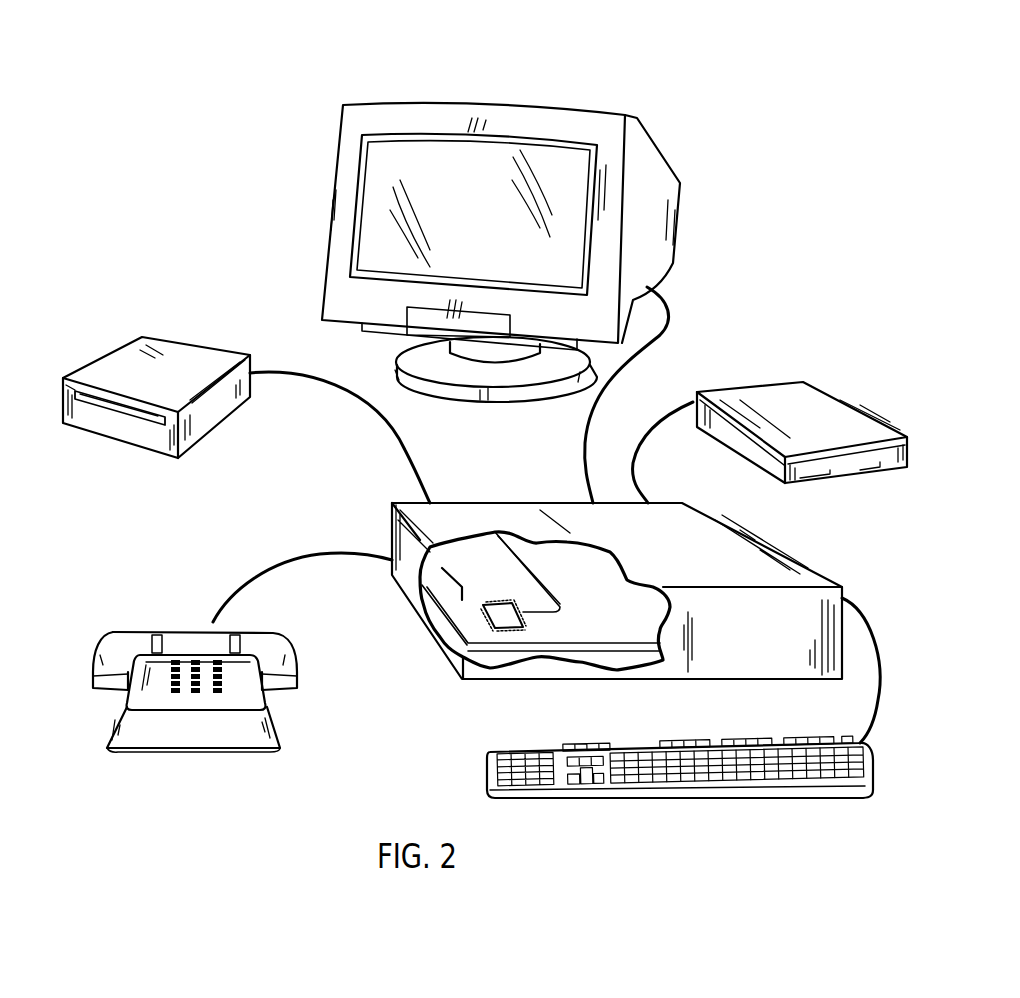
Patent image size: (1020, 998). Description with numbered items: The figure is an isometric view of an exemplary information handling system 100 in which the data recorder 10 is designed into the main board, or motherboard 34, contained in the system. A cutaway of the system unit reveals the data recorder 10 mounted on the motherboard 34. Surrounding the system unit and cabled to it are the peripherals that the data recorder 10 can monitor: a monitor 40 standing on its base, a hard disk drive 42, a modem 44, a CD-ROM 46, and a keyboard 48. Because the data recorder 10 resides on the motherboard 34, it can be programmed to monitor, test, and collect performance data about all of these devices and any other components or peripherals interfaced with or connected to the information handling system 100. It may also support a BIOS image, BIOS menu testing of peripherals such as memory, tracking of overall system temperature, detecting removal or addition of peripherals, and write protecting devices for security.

The information handling system 100 is at (758, 153).
The monitor 40 is at (328, 143).
The CD-ROM 46 is at (153, 357).
The hard disk drive 42 is at (785, 393).
The modem 44 is at (180, 623).
The motherboard 34 is at (442, 580).
The data recorder 10 is at (483, 605).
The keyboard 48 is at (490, 752).